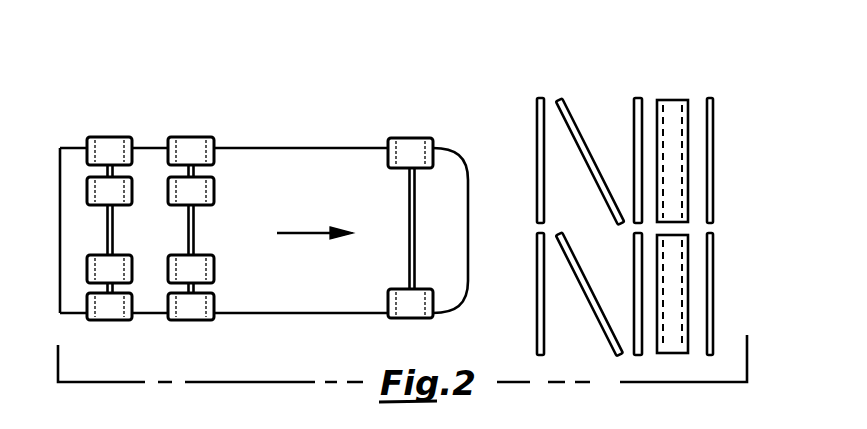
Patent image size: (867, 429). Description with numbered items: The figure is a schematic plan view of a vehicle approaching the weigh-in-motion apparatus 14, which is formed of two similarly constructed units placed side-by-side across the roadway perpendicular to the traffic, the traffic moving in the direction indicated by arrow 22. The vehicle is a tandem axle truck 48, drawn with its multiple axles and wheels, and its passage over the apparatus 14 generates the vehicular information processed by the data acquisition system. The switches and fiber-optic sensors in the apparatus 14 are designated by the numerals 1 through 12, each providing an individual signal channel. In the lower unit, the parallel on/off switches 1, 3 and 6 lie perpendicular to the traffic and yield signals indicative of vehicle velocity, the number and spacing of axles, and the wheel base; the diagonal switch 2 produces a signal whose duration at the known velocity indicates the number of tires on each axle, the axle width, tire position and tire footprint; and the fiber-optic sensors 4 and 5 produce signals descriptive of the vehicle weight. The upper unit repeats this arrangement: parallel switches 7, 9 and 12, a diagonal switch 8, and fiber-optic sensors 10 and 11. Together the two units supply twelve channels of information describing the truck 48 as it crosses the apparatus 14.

The parallel on/off switch channel 1 is at (537, 313).
The diagonal switch channel 2 is at (594, 305).
The parallel on/off switch channel 3 is at (634, 270).
The fiber-optic sensor channel 4 is at (665, 292).
The fiber-optic sensor channel 5 is at (685, 258).
The parallel on/off switch channel 6 is at (713, 323).
The parallel on/off switch channel 7 is at (537, 122).
The diagonal switch channel 8 is at (596, 178).
The parallel on/off switch channel 9 is at (634, 116).
The fiber-optic sensor channel 10 is at (665, 157).
The fiber-optic sensor channel 11 is at (683, 186).
The parallel on/off switch channel 12 is at (713, 115).
The weigh-in-motion apparatus 14 is at (623, 96).
The arrow 22 is at (300, 232).
The tandem axle truck 48 is at (311, 148).